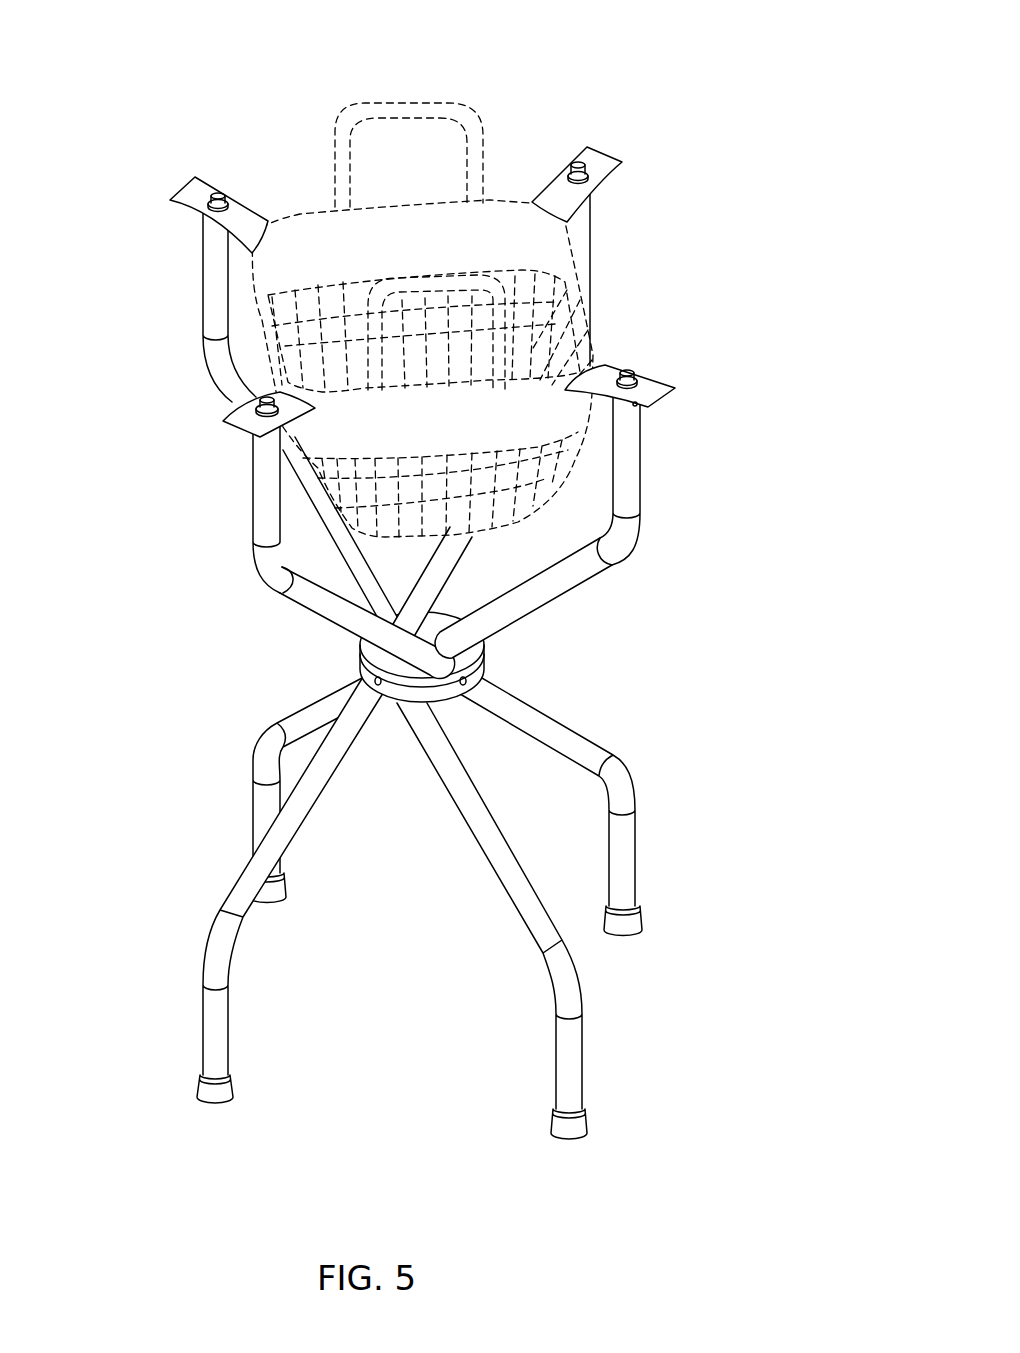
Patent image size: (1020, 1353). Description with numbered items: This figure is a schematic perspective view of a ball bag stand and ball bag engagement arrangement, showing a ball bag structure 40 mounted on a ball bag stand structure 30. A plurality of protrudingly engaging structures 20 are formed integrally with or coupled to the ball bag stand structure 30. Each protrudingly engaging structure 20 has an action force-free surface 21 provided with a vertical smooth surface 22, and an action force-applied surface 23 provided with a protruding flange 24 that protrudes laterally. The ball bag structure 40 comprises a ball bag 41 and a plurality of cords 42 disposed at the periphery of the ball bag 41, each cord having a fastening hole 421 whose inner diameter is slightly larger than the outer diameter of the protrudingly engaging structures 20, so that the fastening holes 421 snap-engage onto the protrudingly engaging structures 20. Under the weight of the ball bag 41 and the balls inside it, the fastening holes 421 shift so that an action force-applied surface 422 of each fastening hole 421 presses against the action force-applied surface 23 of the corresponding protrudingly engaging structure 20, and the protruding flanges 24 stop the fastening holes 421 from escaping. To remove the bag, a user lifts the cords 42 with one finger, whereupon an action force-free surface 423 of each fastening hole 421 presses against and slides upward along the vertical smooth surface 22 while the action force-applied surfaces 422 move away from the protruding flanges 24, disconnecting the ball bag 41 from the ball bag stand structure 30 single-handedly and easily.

The protrudingly engaging structure 20 is at (250, 391).
The action force-free surface 21 is at (567, 177).
The vertical smooth surface 22 is at (577, 174).
The action force-applied surface 23 is at (232, 419).
The protruding flange 24 is at (256, 407).
The ball bag stand structure 30 is at (213, 960).
The ball bag structure 40 is at (322, 517).
The ball bag 41 is at (473, 533).
The cord 42 is at (190, 197).
The fastening hole 421 is at (227, 217).
The action force-applied surface 422 is at (584, 181).
The action force-free surface 423 is at (648, 407).